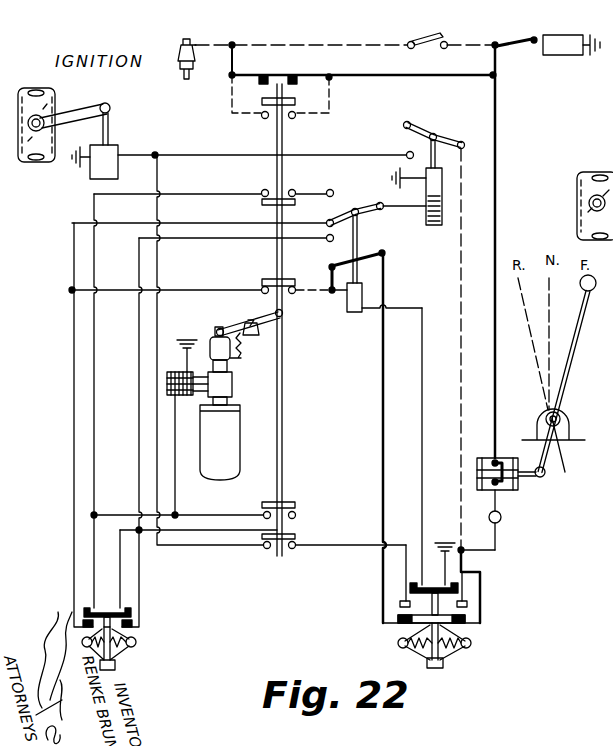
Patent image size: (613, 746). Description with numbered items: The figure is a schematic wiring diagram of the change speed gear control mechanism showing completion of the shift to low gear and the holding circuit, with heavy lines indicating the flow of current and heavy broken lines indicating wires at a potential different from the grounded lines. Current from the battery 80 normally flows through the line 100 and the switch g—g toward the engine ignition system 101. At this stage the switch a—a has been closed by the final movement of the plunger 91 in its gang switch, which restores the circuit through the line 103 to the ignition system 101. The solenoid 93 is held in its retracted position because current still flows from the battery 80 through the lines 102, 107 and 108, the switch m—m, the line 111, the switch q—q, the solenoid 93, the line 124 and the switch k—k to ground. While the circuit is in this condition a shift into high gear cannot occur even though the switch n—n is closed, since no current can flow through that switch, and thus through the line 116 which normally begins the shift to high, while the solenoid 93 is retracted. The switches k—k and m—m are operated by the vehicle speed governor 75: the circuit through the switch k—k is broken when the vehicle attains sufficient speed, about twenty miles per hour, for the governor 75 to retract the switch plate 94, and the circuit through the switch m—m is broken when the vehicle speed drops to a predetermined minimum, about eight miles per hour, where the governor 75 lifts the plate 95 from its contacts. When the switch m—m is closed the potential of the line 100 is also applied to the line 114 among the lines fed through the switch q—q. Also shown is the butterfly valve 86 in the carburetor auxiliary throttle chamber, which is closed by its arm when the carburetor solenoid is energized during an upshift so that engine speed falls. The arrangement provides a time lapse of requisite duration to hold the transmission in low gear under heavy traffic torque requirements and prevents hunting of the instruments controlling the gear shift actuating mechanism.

The engine ignition system 101 is at (176, 43).
The line 100 is at (497, 44).
The battery 80 is at (546, 56).
The line 103 is at (368, 77).
The line 102 is at (497, 150).
The plunger 91 is at (284, 152).
The switch a— a is at (278, 71).
The butterfly valve 86 is at (578, 184).
The solenoid 93 is at (348, 313).
The switch g— g is at (351, 269).
The line 111 is at (382, 452).
The line 124 is at (423, 392).
The line 108 is at (466, 570).
The line 107 is at (502, 521).
The switch plate 94 is at (410, 586).
The plate 95 is at (458, 613).
The switch k— k is at (468, 586).
The switch m— m is at (133, 610).
The governor 75 is at (470, 647).
The line 116 is at (93, 576).
The line 114 is at (123, 590).